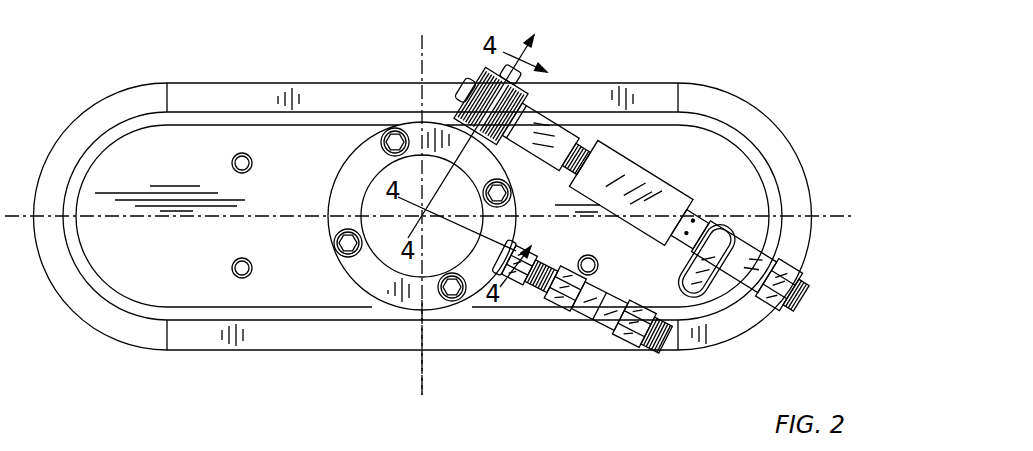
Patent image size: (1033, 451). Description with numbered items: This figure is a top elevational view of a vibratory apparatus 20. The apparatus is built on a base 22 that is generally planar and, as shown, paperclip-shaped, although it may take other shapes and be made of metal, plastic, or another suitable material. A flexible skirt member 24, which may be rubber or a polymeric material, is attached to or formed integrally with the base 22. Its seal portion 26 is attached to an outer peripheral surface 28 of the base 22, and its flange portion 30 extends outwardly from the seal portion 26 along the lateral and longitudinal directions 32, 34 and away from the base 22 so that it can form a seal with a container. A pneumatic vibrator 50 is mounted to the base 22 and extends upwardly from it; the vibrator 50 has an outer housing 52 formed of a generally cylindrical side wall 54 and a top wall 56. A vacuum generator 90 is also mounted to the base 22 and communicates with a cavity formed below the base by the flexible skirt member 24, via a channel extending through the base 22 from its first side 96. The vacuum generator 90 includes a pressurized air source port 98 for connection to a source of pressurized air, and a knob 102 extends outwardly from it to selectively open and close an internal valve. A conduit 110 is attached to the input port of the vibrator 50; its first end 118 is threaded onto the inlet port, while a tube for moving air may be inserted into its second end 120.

The vibratory apparatus 20 is at (617, 72).
The base 22 is at (152, 152).
The flexible skirt member 24 is at (242, 92).
The seal portion 26 is at (148, 315).
The outer peripheral surface 28 is at (307, 125).
The flange portion 30 is at (375, 92).
The lateral direction 32 is at (848, 216).
The longitudinal direction 34 is at (423, 362).
The pneumatic vibrator 50 is at (357, 288).
The outer housing 52 is at (342, 170).
The cylindrical side wall 54 is at (368, 297).
The top wall 56 is at (420, 110).
The vacuum generator 90 is at (657, 160).
The first side 96 is at (725, 162).
The pressurized air source port 98 is at (805, 302).
The knob 102 is at (720, 285).
The conduit 110 is at (593, 342).
The first end 118 is at (513, 290).
The second end 120 is at (637, 352).